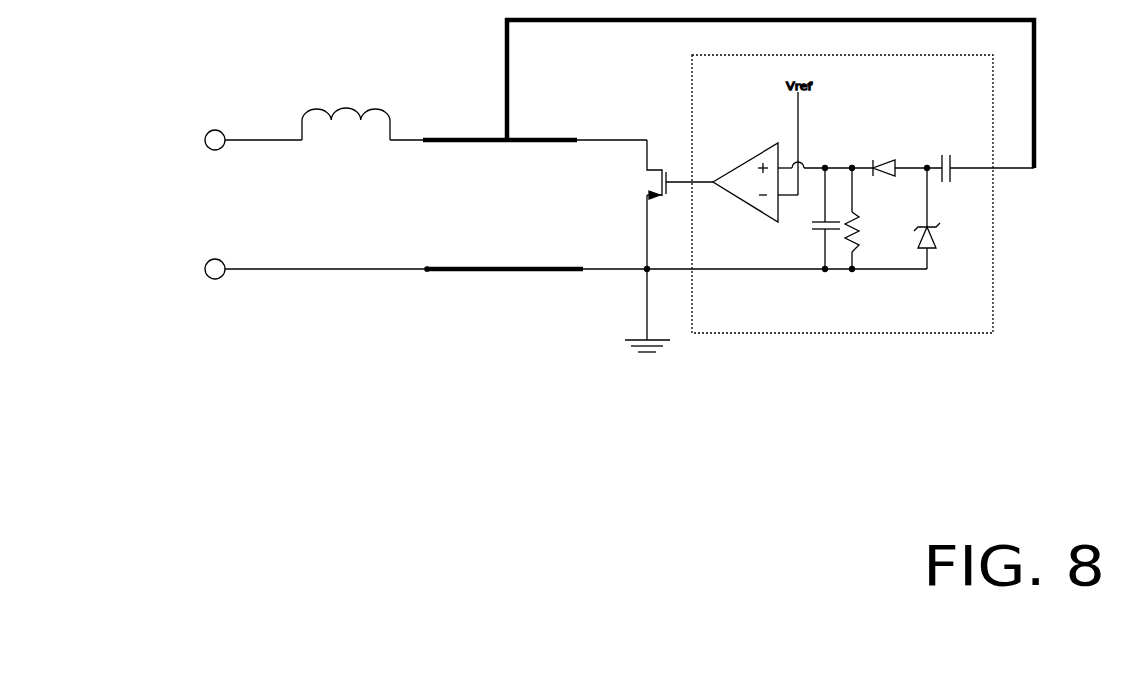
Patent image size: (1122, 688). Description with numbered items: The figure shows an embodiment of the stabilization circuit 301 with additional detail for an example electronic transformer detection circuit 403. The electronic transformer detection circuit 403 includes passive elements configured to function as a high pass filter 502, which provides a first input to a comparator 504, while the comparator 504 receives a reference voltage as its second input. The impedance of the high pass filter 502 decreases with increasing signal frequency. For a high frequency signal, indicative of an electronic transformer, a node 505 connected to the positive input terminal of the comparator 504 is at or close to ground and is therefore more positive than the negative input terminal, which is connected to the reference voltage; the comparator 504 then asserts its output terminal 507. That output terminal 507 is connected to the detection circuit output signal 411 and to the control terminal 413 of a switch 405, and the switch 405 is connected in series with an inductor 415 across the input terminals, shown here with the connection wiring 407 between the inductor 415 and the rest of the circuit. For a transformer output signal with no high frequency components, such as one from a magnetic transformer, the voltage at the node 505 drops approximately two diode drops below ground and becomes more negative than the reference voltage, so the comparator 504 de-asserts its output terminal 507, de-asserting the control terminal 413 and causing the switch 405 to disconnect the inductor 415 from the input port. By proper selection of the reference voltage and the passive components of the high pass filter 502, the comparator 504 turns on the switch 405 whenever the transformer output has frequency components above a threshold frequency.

The stabilization circuit 301 is at (985, 390).
The electronic transformer detection circuit 403 is at (782, 314).
The switch 405 is at (639, 214).
The coil connection wires 407 is at (428, 94).
The output signal 411 is at (680, 180).
The control terminal 413 is at (672, 186).
The inductor 415 is at (345, 121).
The high pass filter 502 is at (958, 112).
The comparator 504 is at (750, 197).
The node 505 is at (852, 167).
The output terminal 507 is at (712, 186).